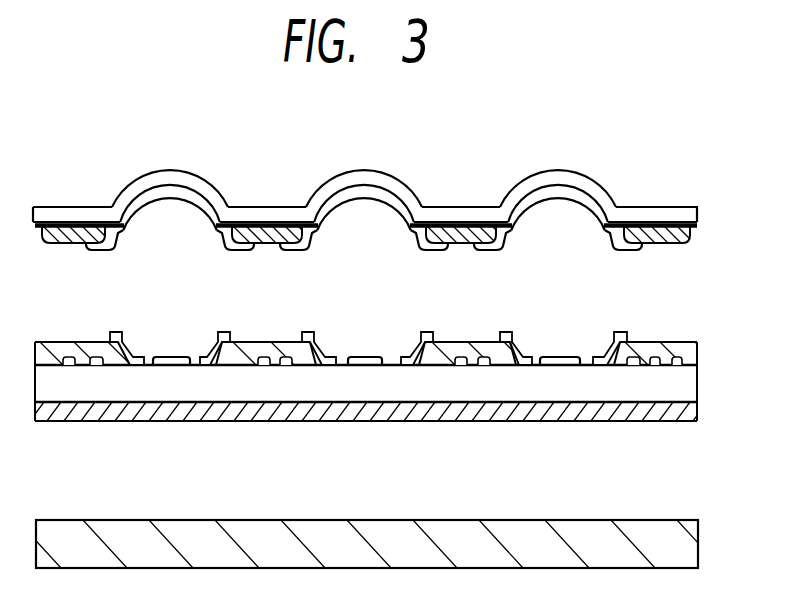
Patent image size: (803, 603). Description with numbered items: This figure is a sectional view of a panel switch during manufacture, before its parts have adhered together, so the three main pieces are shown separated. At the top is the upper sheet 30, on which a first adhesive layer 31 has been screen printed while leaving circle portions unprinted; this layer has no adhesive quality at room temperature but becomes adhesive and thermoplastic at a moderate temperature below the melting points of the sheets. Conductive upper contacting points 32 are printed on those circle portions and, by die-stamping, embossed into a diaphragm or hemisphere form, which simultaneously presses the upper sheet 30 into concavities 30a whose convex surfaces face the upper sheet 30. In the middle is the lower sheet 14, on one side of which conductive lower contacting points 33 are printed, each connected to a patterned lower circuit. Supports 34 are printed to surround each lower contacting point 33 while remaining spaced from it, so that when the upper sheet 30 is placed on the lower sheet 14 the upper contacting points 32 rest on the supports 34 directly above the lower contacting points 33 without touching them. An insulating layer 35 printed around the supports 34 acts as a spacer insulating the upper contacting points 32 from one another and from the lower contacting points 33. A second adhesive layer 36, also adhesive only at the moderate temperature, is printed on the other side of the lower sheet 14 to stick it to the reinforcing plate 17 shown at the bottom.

The lower sheet 14 is at (697, 392).
The reinforcing plate 17 is at (695, 546).
The upper sheet 30 is at (697, 215).
The concavities 30a is at (191, 181).
The first adhesive layer 31 is at (695, 240).
The conductive upper contacting points 32 is at (207, 208).
The conductive lower contacting points 33 is at (169, 357).
The supports 34 is at (121, 333).
The insulating layer 35 is at (697, 356).
The second adhesive layer 36 is at (697, 410).